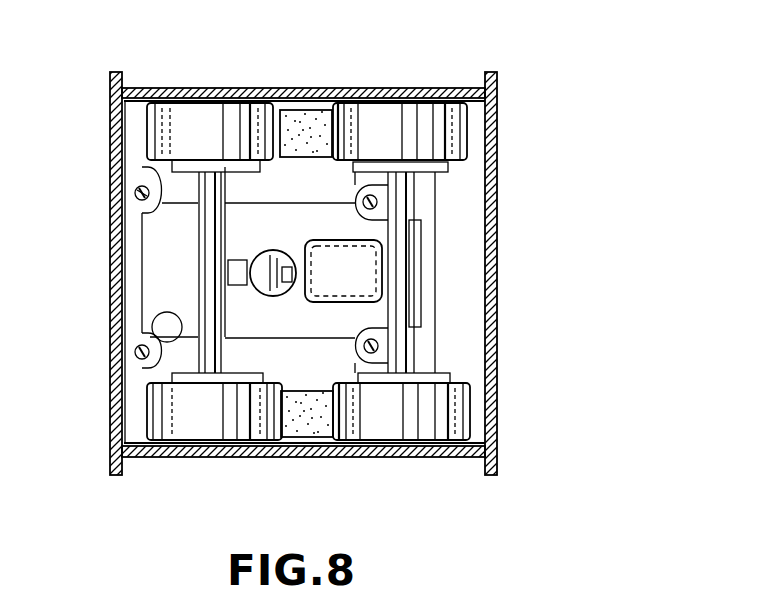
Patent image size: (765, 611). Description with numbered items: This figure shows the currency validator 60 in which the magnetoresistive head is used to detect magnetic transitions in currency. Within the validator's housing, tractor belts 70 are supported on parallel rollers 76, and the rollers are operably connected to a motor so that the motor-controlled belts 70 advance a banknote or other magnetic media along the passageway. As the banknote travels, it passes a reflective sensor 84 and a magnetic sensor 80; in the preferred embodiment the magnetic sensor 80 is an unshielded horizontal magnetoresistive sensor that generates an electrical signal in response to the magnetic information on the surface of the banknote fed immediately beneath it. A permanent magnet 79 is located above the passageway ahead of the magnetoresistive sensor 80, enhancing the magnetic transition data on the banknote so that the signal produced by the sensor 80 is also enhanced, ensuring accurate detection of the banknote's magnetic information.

The currency validator 60 is at (530, 159).
The tractor belts 70 is at (305, 128).
The rollers 76 is at (198, 117).
The permanent magnet 79 is at (231, 270).
The magnetic sensor 80 is at (337, 262).
The reflective sensor 84 is at (263, 271).